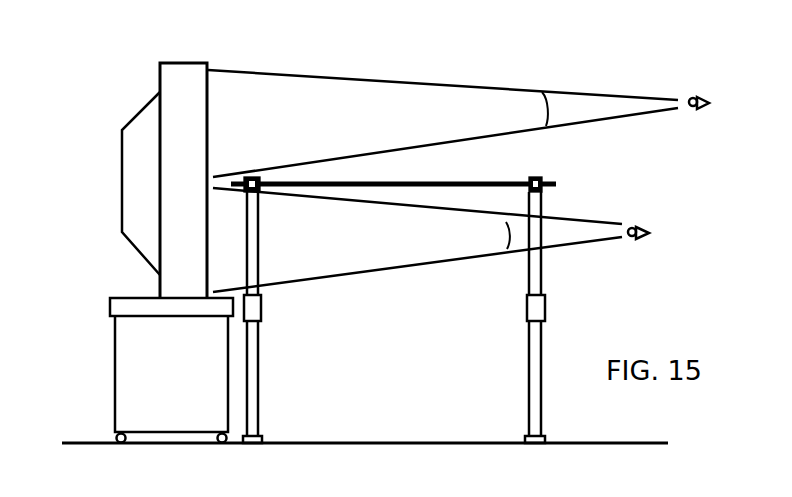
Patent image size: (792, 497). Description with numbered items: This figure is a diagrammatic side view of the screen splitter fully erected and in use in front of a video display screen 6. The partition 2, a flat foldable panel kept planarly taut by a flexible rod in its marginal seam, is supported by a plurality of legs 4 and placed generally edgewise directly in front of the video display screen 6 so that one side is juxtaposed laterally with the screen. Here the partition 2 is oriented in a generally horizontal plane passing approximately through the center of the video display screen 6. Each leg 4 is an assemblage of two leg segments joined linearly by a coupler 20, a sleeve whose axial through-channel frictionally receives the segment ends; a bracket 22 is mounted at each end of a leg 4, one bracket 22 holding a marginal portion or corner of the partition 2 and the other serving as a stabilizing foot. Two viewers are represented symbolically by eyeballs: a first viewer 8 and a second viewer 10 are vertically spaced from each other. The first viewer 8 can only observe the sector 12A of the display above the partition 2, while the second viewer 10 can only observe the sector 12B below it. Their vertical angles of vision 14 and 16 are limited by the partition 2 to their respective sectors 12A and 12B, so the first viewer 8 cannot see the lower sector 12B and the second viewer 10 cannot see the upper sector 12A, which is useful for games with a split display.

The partition 2 is at (365, 182).
The leg 4 is at (260, 355).
The video display screen 6 is at (209, 67).
The first viewer 8 is at (711, 96).
The second viewer 10 is at (652, 227).
The sector 12A is at (209, 126).
The sector 12B is at (207, 247).
The vertical angle of vision 14 is at (540, 112).
The vertical angle of vision 16 is at (503, 235).
The coupler 20 is at (263, 307).
The bracket 22 is at (558, 170).